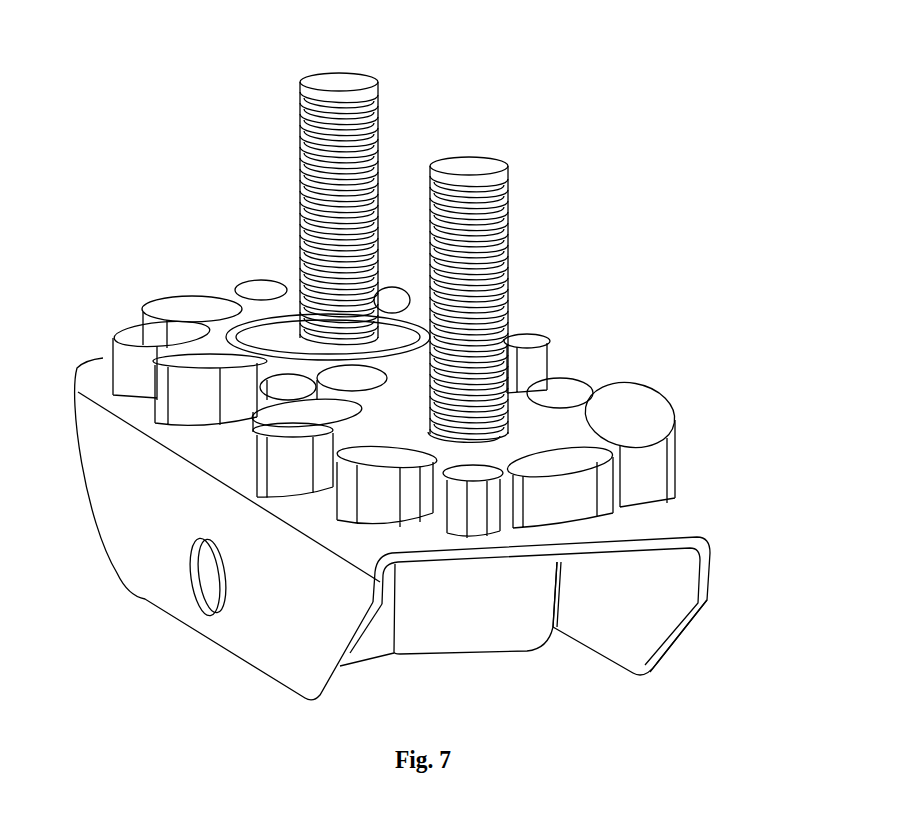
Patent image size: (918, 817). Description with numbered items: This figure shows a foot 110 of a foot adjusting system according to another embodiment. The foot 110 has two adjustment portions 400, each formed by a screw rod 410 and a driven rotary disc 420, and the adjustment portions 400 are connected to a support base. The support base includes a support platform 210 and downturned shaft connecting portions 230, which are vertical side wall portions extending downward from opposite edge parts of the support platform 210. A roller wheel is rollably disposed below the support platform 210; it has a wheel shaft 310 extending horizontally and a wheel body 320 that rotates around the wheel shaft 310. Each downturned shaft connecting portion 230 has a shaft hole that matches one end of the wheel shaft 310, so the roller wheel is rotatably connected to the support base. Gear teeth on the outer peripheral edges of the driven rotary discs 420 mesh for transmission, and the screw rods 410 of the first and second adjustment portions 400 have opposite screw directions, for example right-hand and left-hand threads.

The foot 110 is at (152, 45).
The support platform 210 is at (662, 525).
The downturned shaft connecting portion 230 is at (160, 527).
The wheel shaft 310 is at (212, 582).
The wheel body 320 is at (495, 623).
The adjustment portion 400 is at (178, 158).
The screw rod 410 is at (306, 97).
The driven rotary disc 420 is at (267, 297).